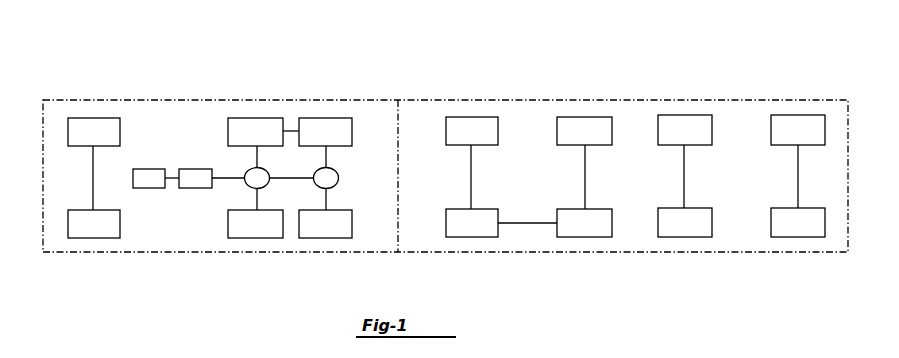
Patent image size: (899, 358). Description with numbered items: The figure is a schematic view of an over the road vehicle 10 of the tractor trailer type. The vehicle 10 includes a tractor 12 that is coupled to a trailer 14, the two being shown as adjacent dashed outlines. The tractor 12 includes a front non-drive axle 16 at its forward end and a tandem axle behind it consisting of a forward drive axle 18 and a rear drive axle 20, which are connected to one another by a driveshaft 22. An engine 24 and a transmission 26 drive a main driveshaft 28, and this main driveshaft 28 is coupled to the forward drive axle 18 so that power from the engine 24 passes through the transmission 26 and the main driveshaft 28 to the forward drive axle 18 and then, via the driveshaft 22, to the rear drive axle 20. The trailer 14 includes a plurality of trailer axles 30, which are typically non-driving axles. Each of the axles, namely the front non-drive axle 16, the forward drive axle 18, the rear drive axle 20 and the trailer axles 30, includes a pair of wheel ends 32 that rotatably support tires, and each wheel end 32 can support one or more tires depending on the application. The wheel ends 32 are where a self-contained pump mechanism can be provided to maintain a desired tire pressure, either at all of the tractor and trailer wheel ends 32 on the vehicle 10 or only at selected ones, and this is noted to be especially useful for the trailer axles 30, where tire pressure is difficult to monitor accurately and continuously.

The over the road vehicle 10 is at (222, 74).
The tractor 12 is at (68, 254).
The trailer 14 is at (607, 252).
The front non-drive axle 16 is at (92, 195).
The forward drive axle 18 is at (255, 196).
The rear drive axle 20 is at (327, 200).
The driveshaft 22 is at (298, 175).
The engine 24 is at (147, 188).
The transmission 26 is at (195, 168).
The main driveshaft 28 is at (226, 175).
The trailer axles 30 is at (585, 191).
The wheel ends 32 is at (93, 118).